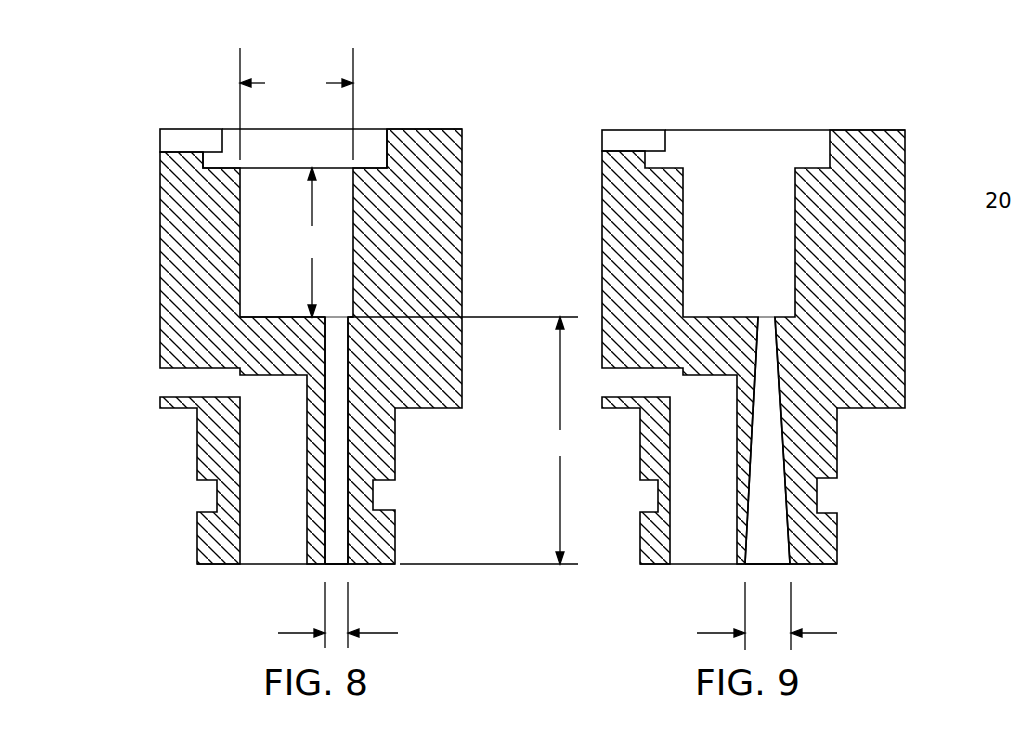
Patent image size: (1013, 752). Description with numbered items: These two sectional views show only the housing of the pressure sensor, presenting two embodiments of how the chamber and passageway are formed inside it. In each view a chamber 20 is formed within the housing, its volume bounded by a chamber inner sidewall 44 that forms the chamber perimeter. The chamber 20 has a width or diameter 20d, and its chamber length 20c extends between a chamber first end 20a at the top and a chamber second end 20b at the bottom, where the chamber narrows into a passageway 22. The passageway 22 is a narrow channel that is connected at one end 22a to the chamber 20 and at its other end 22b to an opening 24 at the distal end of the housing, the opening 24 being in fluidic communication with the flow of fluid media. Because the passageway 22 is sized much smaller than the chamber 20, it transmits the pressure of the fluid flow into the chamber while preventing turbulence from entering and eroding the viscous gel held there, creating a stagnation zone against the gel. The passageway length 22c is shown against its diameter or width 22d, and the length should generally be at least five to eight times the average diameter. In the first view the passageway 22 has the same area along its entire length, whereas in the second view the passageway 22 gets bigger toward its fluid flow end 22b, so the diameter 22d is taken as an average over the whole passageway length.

In FIG. 8, the chamber 20 is at (280, 262).
In FIG. 9, the chamber 20 is at (730, 262).
In FIG. 8, the chamber first end 20a is at (283, 192).
In FIG. 8, the chamber second end 20b is at (290, 306).
In FIG. 8, the chamber length 20c is at (307, 242).
In FIG. 8, the chamber width or diameter 20d is at (296, 104).
In FIG. 8, the passageway 22 is at (338, 417).
In FIG. 9, the passageway 22 is at (767, 397).
In FIG. 8, the chamber end of the passageway 22a is at (338, 325).
In FIG. 9, the chamber end of the passageway 22a is at (770, 327).
In FIG. 8, the fluid flow end of the passageway 22b is at (337, 565).
In FIG. 9, the fluid flow end of the passageway 22b is at (772, 565).
In FIG. 8, the opening 24 is at (403, 583).
In FIG. 9, the opening 24 is at (830, 584).
In FIG. 8, the passageway length 22c is at (466, 440).
In FIG. 8, the passageway diameter or width 22d is at (310, 615).
In FIG. 9, the passageway diameter or width 22d is at (846, 616).
In FIG. 8, the chamber inner sidewall 44 is at (355, 218).
In FIG. 9, the chamber inner sidewall 44 is at (797, 220).